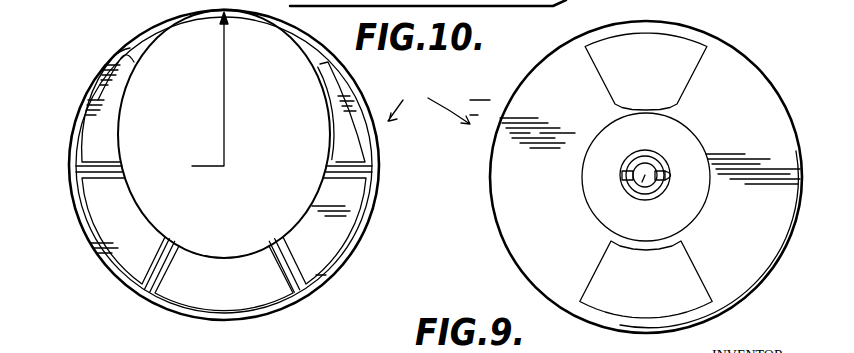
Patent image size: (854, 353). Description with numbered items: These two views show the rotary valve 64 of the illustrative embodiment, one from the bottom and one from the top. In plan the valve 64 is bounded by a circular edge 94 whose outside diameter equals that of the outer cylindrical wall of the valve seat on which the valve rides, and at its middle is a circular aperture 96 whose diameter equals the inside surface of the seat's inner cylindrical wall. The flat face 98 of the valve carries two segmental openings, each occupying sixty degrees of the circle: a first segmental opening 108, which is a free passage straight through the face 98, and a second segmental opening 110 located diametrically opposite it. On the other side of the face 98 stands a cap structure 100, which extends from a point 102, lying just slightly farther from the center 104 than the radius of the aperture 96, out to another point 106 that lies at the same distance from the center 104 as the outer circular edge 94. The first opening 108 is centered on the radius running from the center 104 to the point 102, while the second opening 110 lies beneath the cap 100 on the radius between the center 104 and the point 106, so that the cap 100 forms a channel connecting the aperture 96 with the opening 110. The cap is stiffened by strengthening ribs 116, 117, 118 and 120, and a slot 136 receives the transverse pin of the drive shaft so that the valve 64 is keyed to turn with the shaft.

In FIG. 10, the valve 64 is at (388, 216).
In FIG. 10, the circular edge 94 is at (345, 246).
In FIG. 9, the circular edge 94 is at (497, 208).
In FIG. 9, the circular aperture 96 is at (588, 176).
In FIG. 9, the face 98 is at (552, 84).
In FIG. 10, the cap structure 100 is at (140, 88).
In FIG. 10, the point 102 is at (232, 257).
In FIG. 10, the center 104 is at (192, 166).
In FIG. 9, the center 104 is at (648, 172).
In FIG. 10, the point 106 is at (212, 10).
In FIG. 10, the first segmental opening 108 is at (195, 296).
In FIG. 9, the first segmental opening 108 is at (612, 268).
In FIG. 9, the second segmental opening 110 is at (670, 62).
In FIG. 10, the strengthening rib 116 is at (98, 160).
In FIG. 10, the strengthening rib 117 is at (156, 268).
In FIG. 10, the strengthening rib 118 is at (295, 270).
In FIG. 10, the strengthening rib 120 is at (352, 168).
In FIG. 9, the slot 136 is at (666, 177).